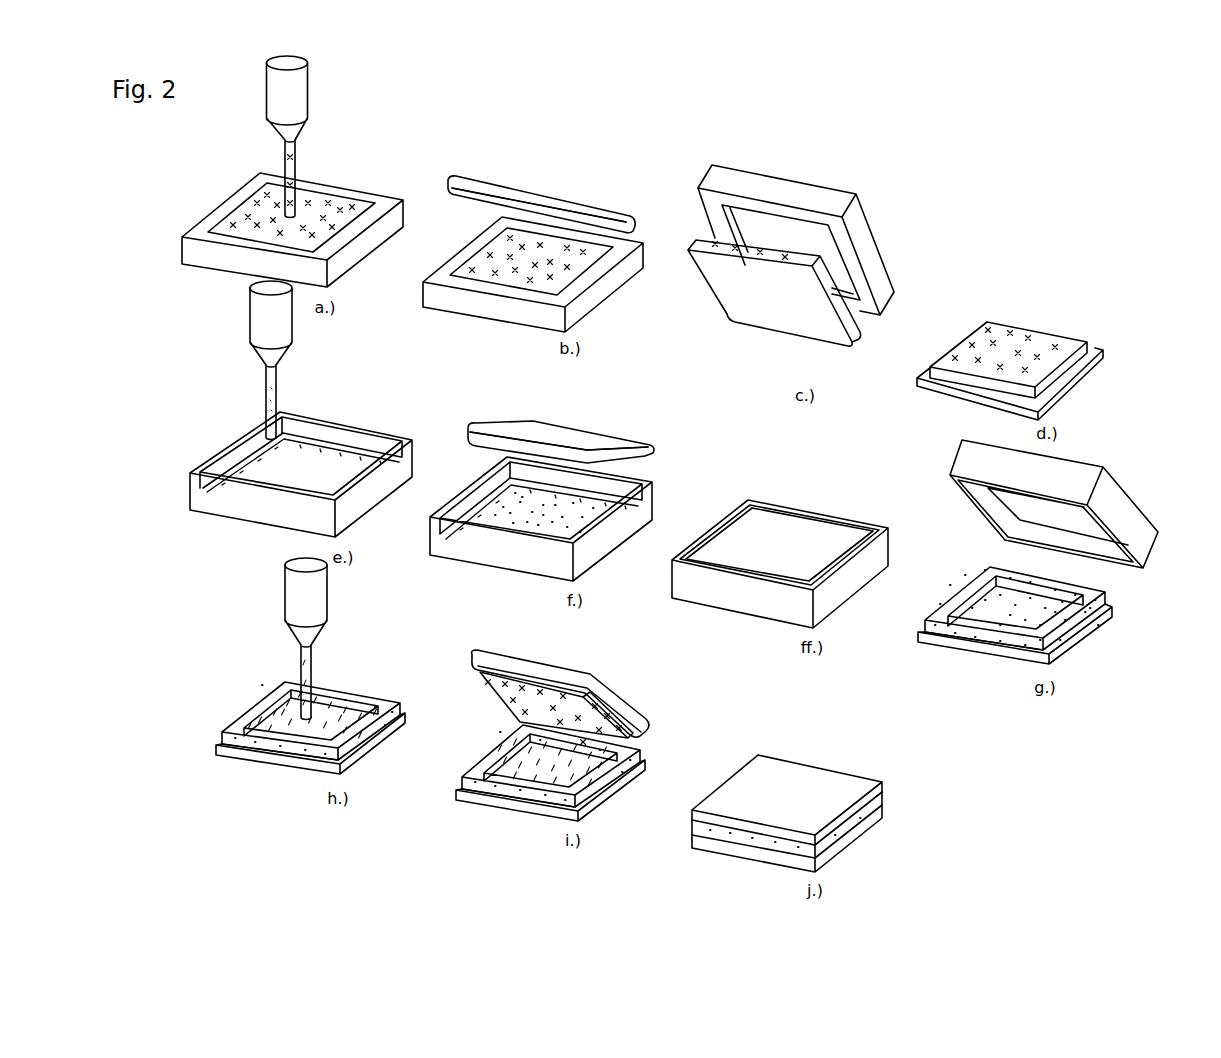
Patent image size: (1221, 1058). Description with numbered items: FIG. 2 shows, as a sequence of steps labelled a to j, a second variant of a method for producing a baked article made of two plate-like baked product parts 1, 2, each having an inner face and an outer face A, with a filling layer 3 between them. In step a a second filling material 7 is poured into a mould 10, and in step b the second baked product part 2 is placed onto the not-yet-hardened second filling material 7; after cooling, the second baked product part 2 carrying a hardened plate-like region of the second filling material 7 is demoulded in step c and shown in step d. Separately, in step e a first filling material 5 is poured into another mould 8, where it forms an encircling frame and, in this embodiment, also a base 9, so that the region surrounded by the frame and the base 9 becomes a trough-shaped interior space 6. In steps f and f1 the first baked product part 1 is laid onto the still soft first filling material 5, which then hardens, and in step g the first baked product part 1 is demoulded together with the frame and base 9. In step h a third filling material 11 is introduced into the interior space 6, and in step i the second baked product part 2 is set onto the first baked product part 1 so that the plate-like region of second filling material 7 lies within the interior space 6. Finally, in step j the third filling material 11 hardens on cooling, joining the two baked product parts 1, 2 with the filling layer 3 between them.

The first baked product part 1 is at (518, 207).
The second baked product part 2 is at (517, 196).
The filling layer 3 is at (870, 807).
The first filling material 5 is at (278, 406).
The trough-shaped interior space 6 is at (1003, 603).
The second filling material 7 is at (295, 181).
The mould 8 is at (220, 503).
The base 9 is at (515, 500).
The mould 10 is at (203, 258).
The third filling material 11 is at (313, 666).
The outer face A is at (580, 200).